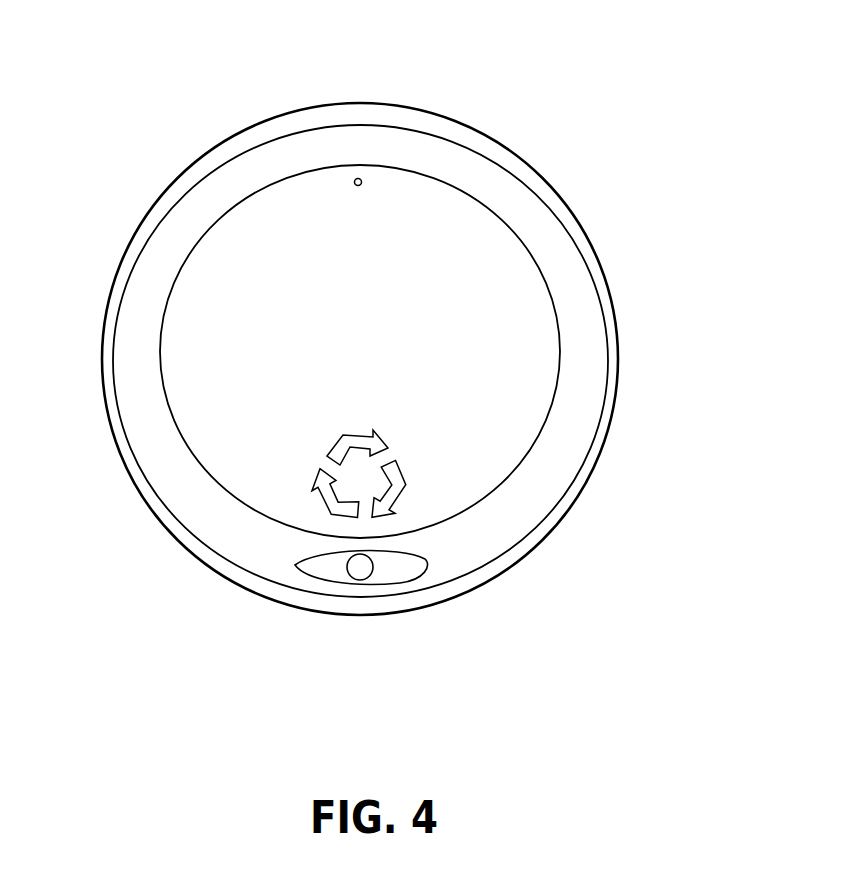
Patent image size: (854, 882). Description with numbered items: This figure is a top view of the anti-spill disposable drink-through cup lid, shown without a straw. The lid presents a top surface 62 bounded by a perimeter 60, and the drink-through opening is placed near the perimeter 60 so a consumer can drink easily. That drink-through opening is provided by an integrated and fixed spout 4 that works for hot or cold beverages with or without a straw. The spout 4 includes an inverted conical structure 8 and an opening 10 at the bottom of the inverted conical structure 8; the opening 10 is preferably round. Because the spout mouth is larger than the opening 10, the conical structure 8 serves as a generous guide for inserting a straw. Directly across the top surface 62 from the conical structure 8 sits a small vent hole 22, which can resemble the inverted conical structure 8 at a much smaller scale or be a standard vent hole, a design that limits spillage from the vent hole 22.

The integrated spout 4 is at (360, 587).
The inverted conical structure 8 is at (403, 568).
The opening 10 is at (345, 566).
The vent hole 22 is at (363, 170).
The perimeter 60 is at (542, 539).
The top surface 62 is at (518, 523).